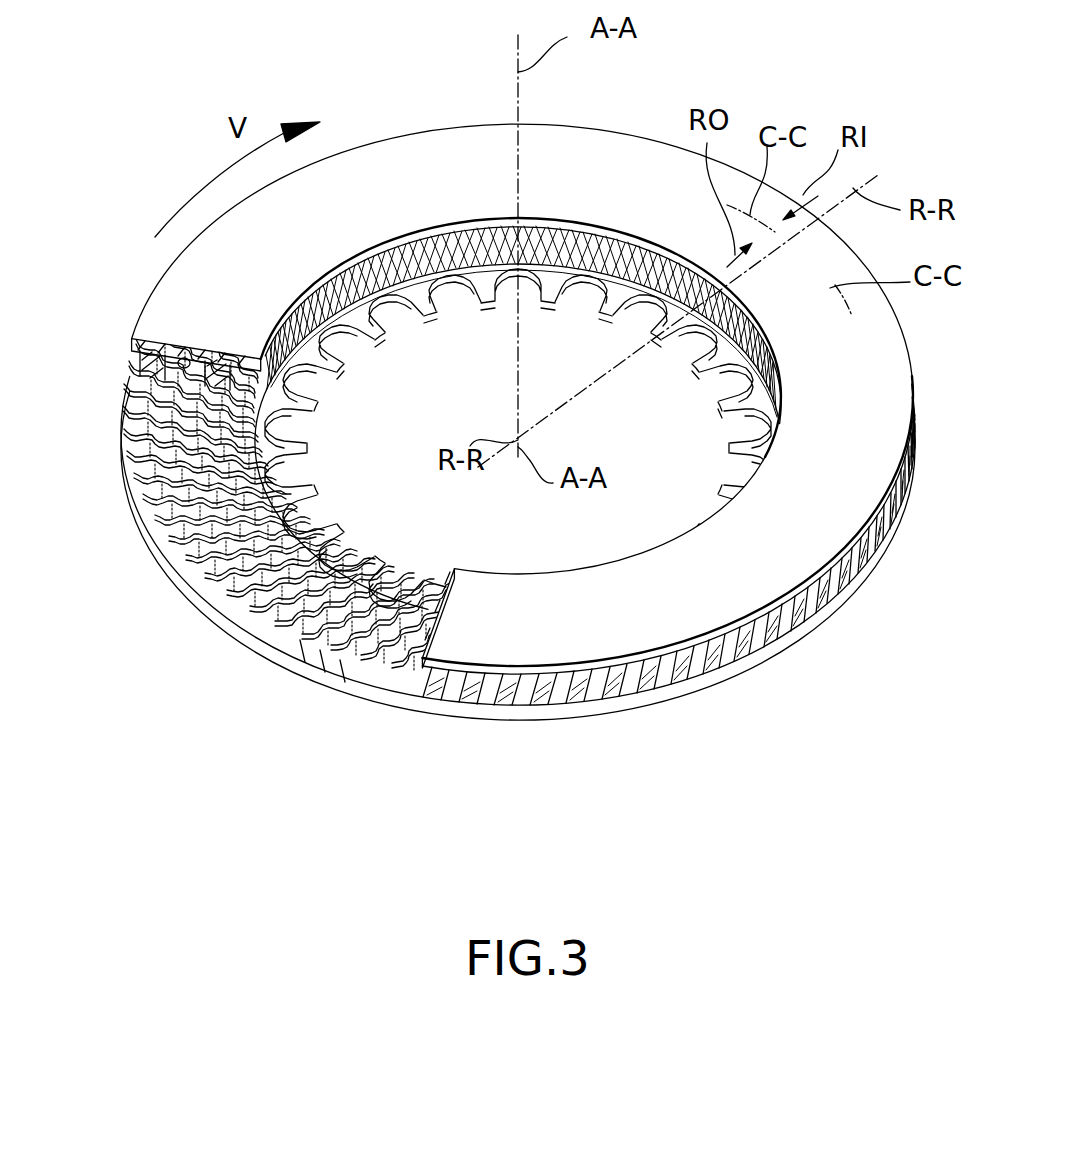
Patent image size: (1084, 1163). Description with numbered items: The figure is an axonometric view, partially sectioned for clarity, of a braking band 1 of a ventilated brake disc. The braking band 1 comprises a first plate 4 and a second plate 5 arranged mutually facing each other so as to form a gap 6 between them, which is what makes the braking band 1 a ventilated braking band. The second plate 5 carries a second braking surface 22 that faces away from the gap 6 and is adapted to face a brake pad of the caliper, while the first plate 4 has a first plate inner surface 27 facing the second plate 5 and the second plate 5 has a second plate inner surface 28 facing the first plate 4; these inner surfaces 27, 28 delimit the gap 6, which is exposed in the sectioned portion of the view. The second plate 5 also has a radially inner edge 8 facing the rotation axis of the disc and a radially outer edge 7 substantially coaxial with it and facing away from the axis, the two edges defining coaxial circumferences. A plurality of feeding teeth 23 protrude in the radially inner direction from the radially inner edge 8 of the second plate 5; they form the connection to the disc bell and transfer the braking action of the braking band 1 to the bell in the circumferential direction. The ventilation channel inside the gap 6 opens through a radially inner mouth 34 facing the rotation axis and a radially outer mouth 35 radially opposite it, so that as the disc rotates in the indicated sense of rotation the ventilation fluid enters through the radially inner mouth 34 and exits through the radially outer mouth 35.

The braking band 1 is at (672, 85).
The first plate 4 is at (345, 683).
The second plate 5 is at (133, 376).
The gap 6 is at (114, 352).
The radially outer edge 7 is at (152, 290).
The radially inner edge 8 is at (295, 297).
The second braking surface 22 is at (358, 207).
The feeding teeth 23 is at (336, 355).
The first plate inner surface 27 is at (300, 640).
The second plate inner surface 28 is at (184, 357).
The radially inner mouth 34 is at (388, 306).
The radially outer mouth 35 is at (781, 644).